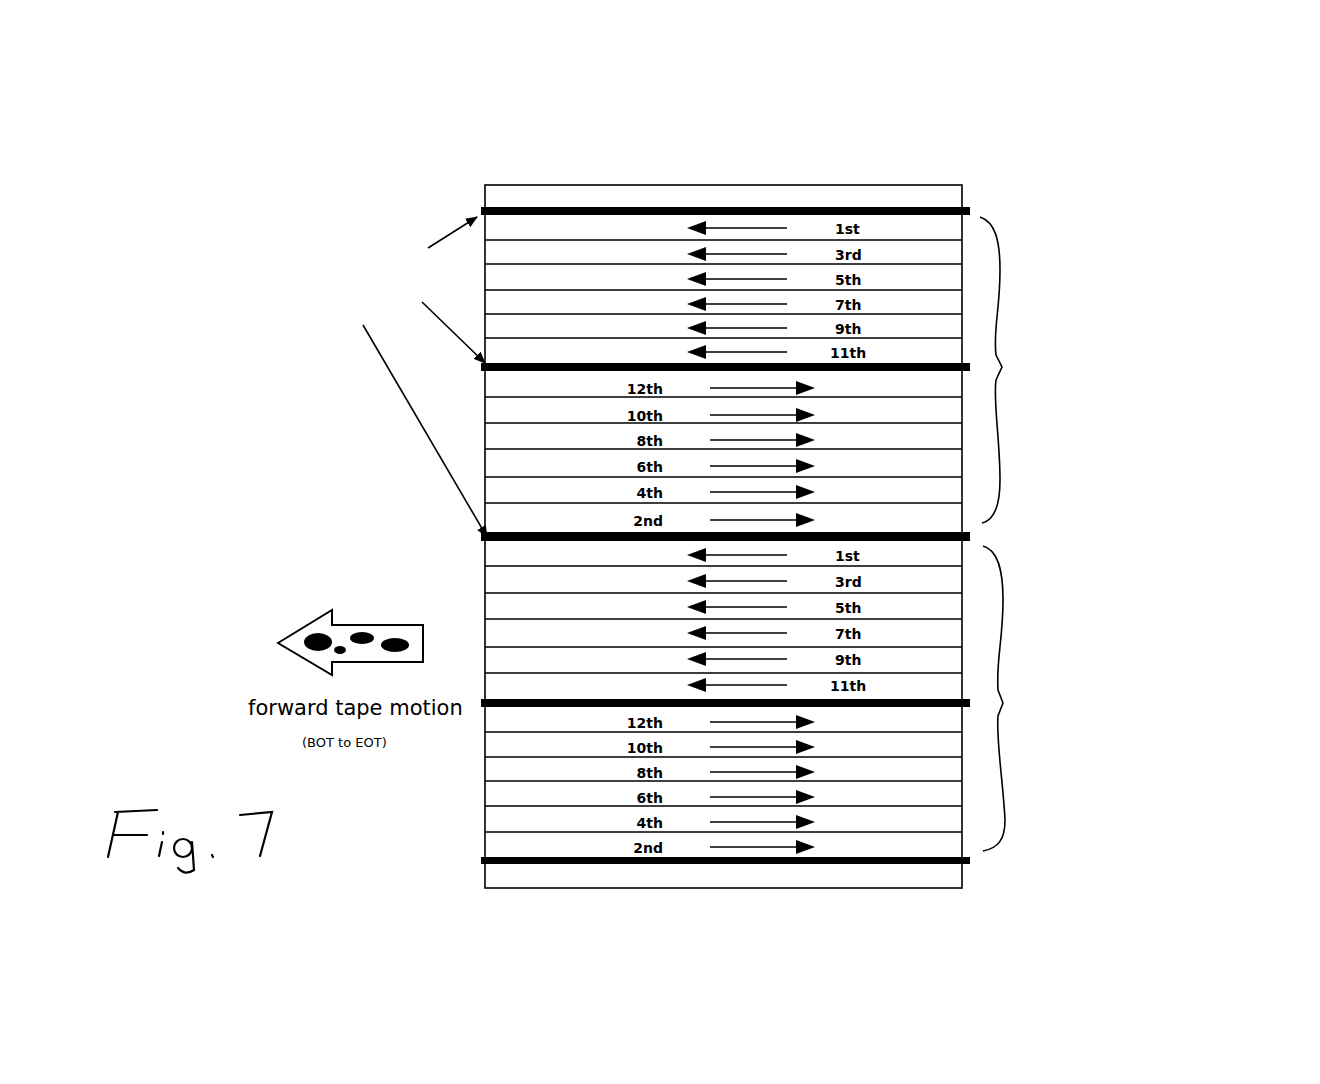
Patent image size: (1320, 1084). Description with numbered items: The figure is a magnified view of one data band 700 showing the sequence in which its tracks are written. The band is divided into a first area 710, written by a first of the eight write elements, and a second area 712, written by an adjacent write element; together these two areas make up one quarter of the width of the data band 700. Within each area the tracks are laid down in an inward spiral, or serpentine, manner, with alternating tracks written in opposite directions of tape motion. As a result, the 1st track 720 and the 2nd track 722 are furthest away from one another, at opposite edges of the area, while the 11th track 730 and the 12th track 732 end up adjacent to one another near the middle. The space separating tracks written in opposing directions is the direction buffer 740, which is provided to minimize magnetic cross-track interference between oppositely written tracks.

The data band 700 is at (358, 150).
The first area 710 is at (1153, 350).
The second area 712 is at (1172, 668).
The 1st track 720 is at (872, 228).
The 2nd track 722 is at (950, 522).
The 11th track 730 is at (951, 356).
The 12th track 732 is at (958, 383).
The direction buffer 740 is at (210, 302).